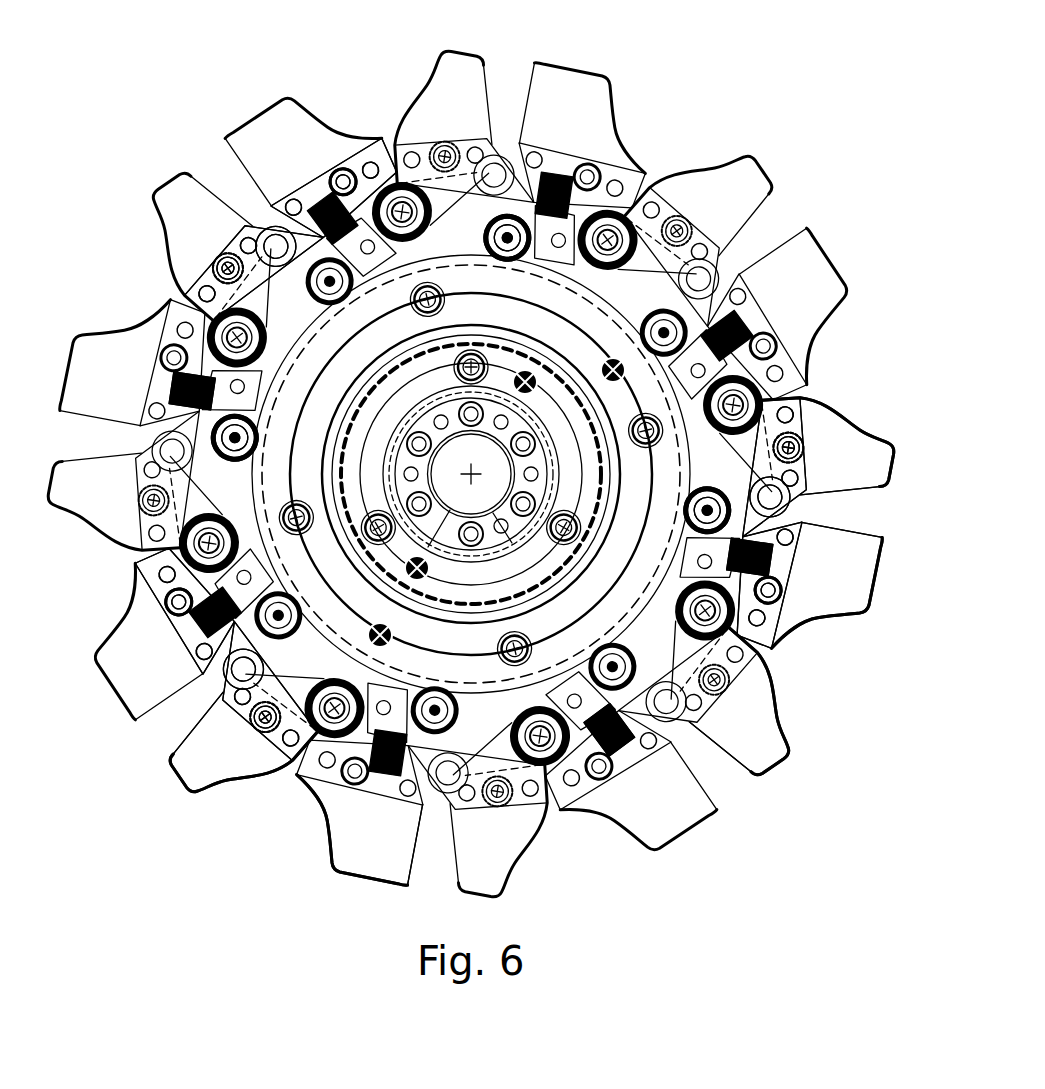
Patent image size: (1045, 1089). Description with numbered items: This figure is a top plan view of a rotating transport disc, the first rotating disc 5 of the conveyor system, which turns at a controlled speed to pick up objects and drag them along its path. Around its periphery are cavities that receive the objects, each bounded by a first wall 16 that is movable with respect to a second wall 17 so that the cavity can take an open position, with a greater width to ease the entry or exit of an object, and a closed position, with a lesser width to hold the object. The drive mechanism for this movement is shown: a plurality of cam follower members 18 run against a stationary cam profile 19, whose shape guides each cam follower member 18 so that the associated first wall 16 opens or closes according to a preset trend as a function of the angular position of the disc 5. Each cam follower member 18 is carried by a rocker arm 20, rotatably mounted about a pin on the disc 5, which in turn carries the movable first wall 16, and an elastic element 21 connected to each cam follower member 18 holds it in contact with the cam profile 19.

The first rotating disc 5 is at (650, 295).
The first wall 16 is at (240, 782).
The second wall 17 is at (860, 580).
The cam follower member 18 is at (505, 228).
The stationary cam profile 19 is at (262, 497).
The rocker arm 20 is at (310, 240).
The elastic element 21 is at (190, 392).